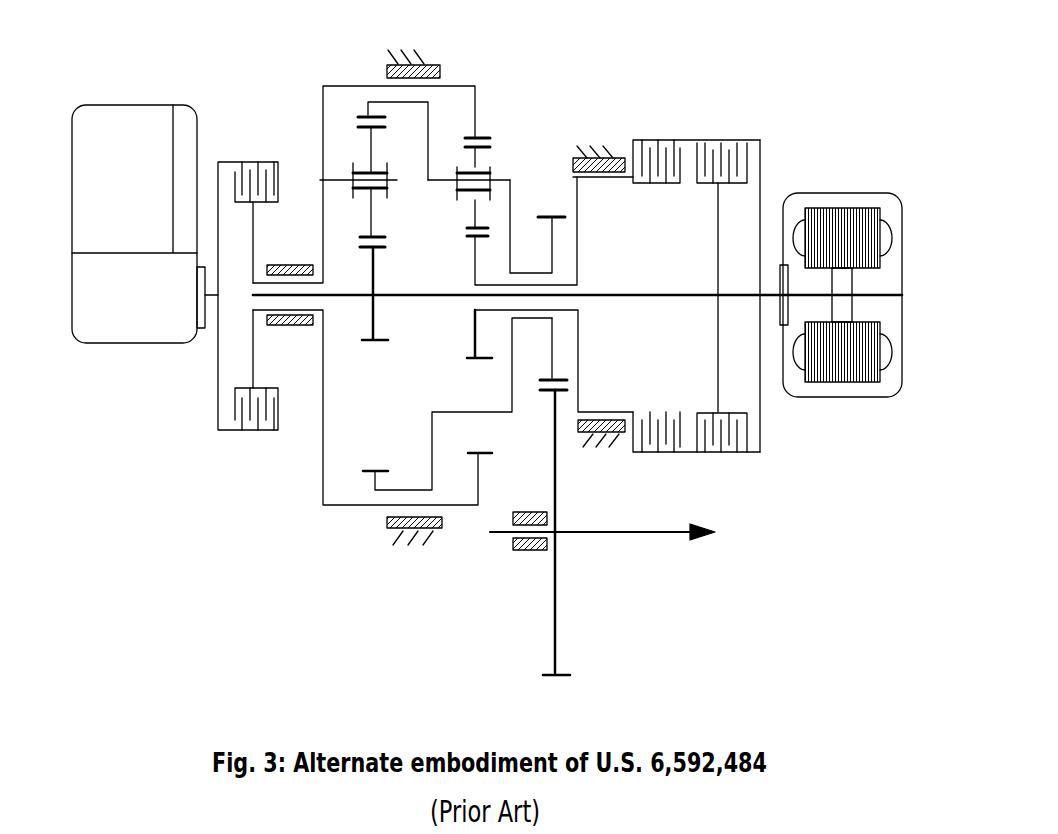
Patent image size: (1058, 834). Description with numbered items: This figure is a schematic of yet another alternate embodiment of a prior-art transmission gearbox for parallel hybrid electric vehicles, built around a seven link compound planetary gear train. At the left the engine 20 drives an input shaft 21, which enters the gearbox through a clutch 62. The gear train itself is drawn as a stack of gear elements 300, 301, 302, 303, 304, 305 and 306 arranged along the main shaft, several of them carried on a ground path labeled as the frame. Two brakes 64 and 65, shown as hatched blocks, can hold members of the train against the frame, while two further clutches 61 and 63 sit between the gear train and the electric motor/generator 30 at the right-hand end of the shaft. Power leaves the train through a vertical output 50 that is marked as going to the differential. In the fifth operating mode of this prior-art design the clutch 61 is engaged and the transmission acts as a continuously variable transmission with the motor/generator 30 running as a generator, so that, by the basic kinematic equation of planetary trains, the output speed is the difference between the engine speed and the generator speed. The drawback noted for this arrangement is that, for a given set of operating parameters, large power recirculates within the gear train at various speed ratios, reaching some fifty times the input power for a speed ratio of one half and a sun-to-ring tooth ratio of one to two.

The engine 20 is at (72, 343).
The engine output shaft 21 is at (211, 300).
The clutch 62 is at (240, 170).
The gear 304 is at (344, 178).
The gear 301 is at (363, 114).
The brake 64 is at (431, 62).
The gear 303 is at (484, 130).
The gear 306 is at (467, 234).
The gear 302 is at (511, 176).
The gear 300 is at (555, 197).
The gear 305 is at (380, 250).
The brake 65 is at (598, 156).
The clutch 61 is at (656, 153).
The clutch 63 is at (731, 153).
The electric motor/generator 30 is at (898, 219).
The output to differential 50 is at (683, 527).